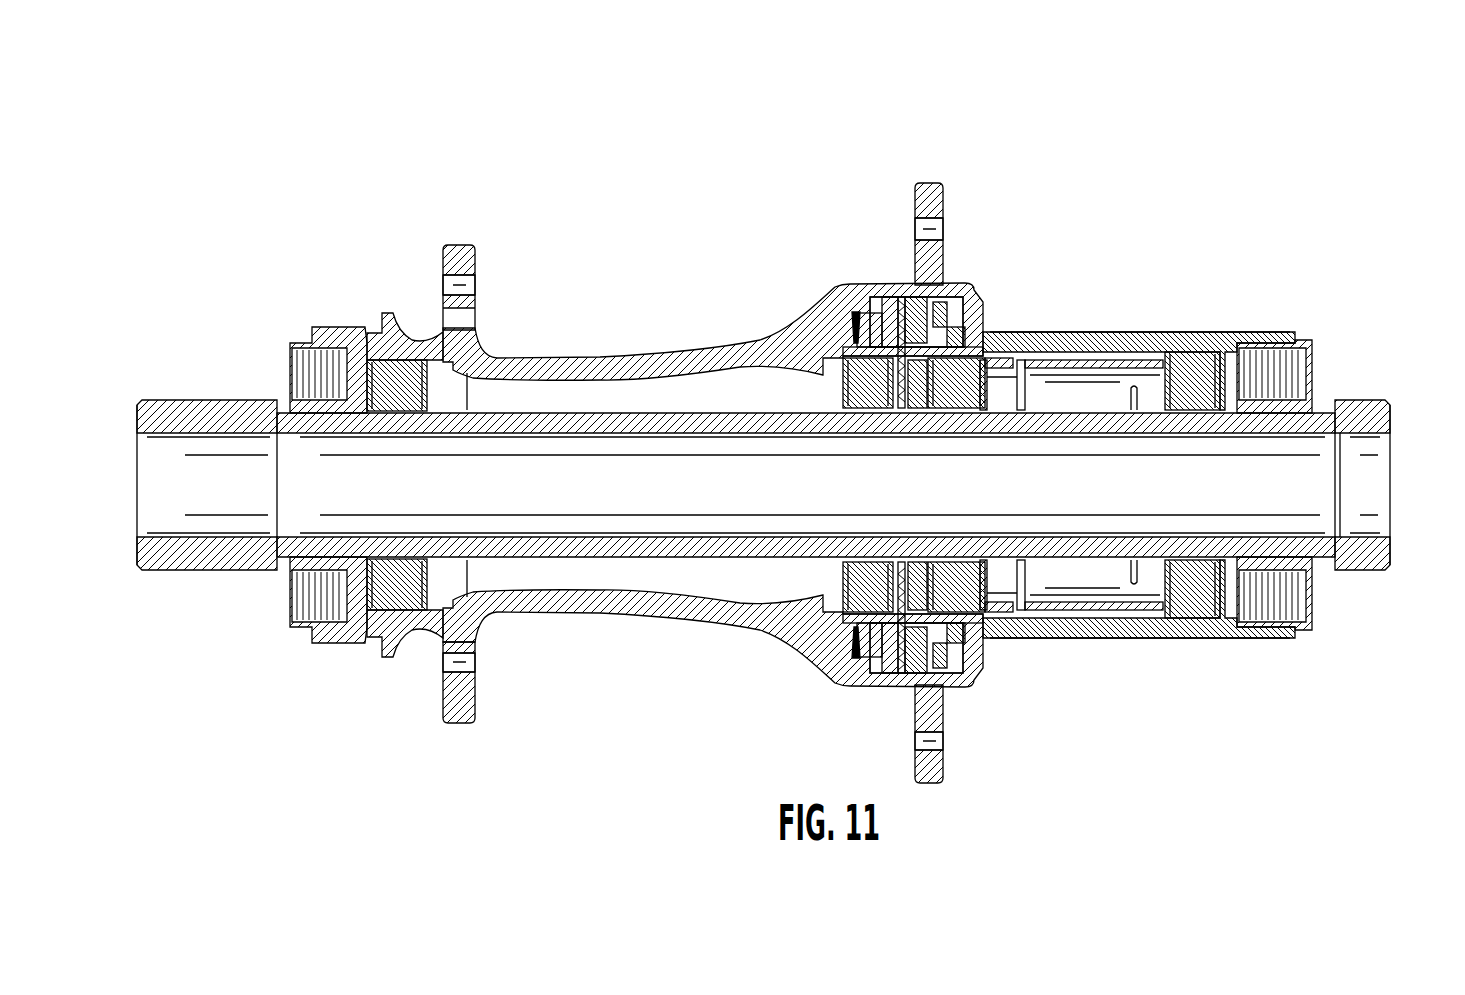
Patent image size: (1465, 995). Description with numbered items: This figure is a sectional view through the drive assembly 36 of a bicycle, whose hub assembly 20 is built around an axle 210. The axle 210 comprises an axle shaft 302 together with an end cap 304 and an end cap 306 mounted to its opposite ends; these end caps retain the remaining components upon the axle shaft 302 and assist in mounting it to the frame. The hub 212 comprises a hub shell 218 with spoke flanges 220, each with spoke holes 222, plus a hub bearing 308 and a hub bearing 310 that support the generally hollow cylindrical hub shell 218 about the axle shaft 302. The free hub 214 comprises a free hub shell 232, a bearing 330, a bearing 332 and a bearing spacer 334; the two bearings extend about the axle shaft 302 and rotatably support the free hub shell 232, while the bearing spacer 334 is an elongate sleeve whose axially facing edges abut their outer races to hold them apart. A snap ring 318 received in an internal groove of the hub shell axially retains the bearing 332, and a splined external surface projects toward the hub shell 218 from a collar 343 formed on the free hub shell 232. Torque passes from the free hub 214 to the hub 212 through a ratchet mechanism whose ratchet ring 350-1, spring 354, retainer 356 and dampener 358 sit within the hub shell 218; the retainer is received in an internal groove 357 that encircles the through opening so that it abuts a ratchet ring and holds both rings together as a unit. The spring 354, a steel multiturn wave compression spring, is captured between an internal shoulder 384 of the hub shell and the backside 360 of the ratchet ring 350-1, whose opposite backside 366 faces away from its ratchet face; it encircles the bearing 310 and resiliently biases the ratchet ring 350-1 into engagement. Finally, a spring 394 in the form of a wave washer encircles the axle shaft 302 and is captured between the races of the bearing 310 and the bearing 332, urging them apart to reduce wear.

The bicycle hub assembly 20 is at (178, 143).
The drive assembly 36 is at (308, 203).
The axle 210 is at (572, 553).
The hub 212 is at (632, 175).
The free hub 214 is at (1230, 165).
The hub shell 218 is at (652, 355).
The spoke flanges 220 is at (458, 245).
The spoke hole 222 is at (467, 278).
The free hub shell 232 is at (1210, 332).
The axle shaft 302 is at (628, 556).
The end cap 304 is at (1358, 400).
The end cap 306 is at (170, 400).
The hub bearing 308 is at (417, 615).
The hub bearing 310 is at (852, 600).
The snap ring 318 is at (985, 353).
The bearing 330 is at (1205, 638).
The bearing 332 is at (982, 632).
The bearing spacer 334 is at (1160, 625).
The collar 343 is at (985, 337).
The ratchet ring 350-1 is at (890, 313).
The spring 354 is at (860, 303).
The retainer 356 is at (940, 302).
The internal groove 357 is at (930, 305).
The dampener 358 is at (980, 313).
The backside 360 is at (880, 655).
The backside 366 is at (897, 300).
The internal shoulder 384 is at (853, 322).
The spring 394 is at (905, 410).